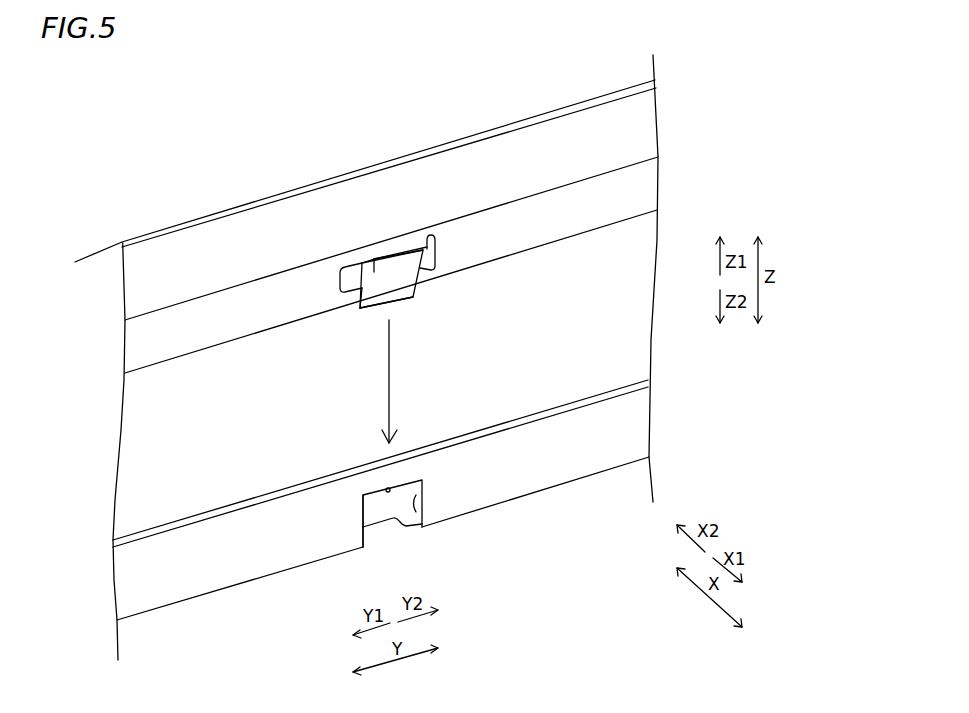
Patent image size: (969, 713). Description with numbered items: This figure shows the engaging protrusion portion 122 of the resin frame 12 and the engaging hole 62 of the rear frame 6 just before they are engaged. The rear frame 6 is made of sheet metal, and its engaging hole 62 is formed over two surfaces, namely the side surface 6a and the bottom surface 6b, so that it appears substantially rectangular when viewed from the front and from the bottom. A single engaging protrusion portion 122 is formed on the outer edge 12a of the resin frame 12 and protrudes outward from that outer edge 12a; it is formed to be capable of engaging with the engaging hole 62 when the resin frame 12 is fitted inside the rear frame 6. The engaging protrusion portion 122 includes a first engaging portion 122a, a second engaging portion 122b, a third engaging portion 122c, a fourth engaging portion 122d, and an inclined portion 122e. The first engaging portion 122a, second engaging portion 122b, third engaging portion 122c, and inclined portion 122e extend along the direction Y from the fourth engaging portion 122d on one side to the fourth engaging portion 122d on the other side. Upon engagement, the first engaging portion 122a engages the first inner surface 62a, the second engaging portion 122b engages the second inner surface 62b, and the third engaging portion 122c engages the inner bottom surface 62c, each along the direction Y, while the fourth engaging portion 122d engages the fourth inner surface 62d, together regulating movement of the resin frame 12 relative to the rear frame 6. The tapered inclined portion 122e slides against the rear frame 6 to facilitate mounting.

The resin frame 12 is at (366, 357).
The outer edge 12a is at (535, 208).
The engaging protrusion portion 122 is at (339, 232).
The first engaging portion 122a is at (385, 260).
The second engaging portion 122b is at (357, 304).
The third engaging portion 122c is at (427, 252).
The fourth engaging portion 122d is at (343, 270).
The inclined portion 122e is at (398, 292).
The rear frame 6 is at (381, 500).
The side surface 6a is at (572, 473).
The bottom surface 6b is at (512, 502).
The engaging hole 62 is at (390, 496).
The first inner surface 62a is at (388, 490).
The second inner surface 62b is at (390, 528).
The inner bottom surface 62c is at (383, 520).
The fourth inner surface 62d is at (428, 528).